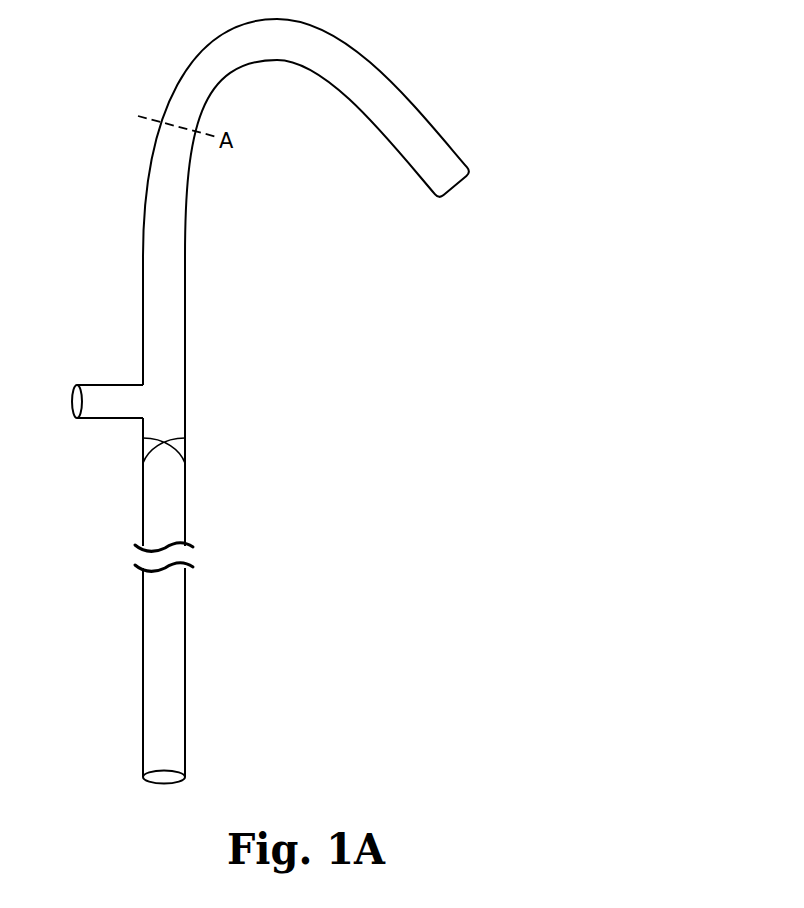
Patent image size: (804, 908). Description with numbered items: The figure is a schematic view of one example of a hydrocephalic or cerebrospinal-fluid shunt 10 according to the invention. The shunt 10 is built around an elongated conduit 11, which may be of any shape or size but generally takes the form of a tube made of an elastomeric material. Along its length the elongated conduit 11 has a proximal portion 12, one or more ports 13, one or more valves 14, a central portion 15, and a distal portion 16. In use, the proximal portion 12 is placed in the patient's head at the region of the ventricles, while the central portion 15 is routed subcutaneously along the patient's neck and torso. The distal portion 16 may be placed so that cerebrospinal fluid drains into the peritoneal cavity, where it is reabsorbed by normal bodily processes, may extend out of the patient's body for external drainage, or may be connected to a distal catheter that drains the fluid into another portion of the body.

The shunt 10 is at (370, 382).
The elongated conduit 11 is at (148, 170).
The proximal portion 12 is at (387, 73).
The port 13 is at (103, 385).
The valve 14 is at (180, 449).
The central portion 15 is at (203, 508).
The distal portion 16 is at (143, 764).